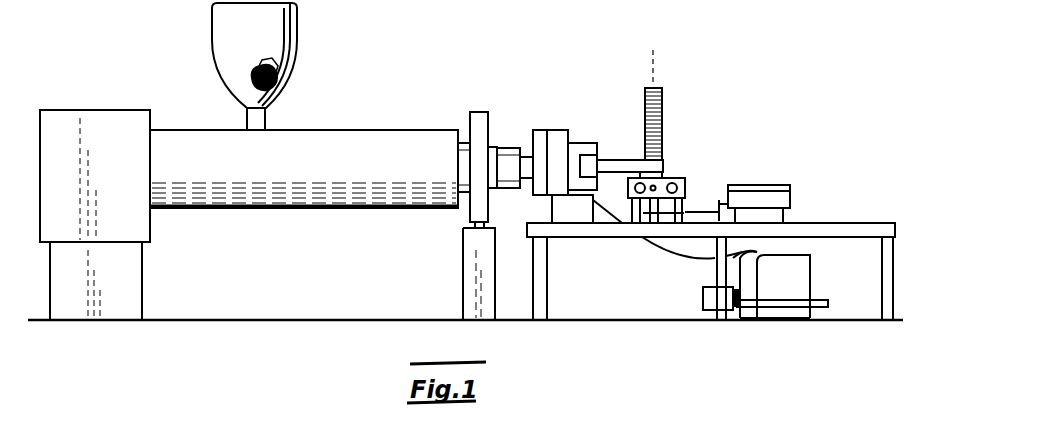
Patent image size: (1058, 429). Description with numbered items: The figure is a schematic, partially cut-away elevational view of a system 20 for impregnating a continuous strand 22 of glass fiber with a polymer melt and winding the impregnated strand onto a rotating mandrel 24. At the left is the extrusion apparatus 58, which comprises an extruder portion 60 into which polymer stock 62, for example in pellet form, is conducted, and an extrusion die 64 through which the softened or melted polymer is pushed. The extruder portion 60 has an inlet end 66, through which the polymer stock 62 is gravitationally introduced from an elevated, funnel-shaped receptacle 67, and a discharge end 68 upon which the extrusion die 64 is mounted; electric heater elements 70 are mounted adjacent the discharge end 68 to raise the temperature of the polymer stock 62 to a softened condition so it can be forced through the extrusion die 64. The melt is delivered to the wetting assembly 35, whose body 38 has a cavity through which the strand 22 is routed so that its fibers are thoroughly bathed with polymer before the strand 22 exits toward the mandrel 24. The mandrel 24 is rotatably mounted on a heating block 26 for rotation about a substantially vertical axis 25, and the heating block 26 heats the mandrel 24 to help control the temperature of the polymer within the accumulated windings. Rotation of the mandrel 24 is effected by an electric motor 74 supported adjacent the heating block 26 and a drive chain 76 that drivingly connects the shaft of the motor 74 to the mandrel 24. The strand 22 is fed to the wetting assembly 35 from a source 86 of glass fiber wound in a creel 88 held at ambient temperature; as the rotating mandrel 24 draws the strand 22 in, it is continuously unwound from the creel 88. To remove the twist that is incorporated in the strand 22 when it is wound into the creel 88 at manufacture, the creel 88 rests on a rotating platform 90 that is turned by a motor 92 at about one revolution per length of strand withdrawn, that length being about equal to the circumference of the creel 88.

The system 20 is at (703, 100).
The continuous strand 22 is at (613, 160).
The mandrel 24 is at (686, 178).
The vertical axis 25 is at (652, 50).
The heating block 26 is at (697, 210).
The wetting assembly 35 is at (542, 83).
The body 38 is at (549, 130).
The extrusion apparatus 58 is at (155, 62).
The extruder portion 60 is at (292, 128).
The polymer stock 62 is at (274, 78).
The extrusion die 64 is at (506, 148).
The inlet end 66 is at (163, 141).
The funnel-shaped receptacle 67 is at (292, 22).
The discharge end 68 is at (442, 136).
The electric heater elements 70 is at (475, 205).
The electric motor 74 is at (792, 190).
The drive chain 76 is at (728, 190).
The source 86 is at (812, 260).
The creel 88 is at (812, 293).
The rotating platform 90 is at (780, 306).
The motor 92 is at (705, 302).